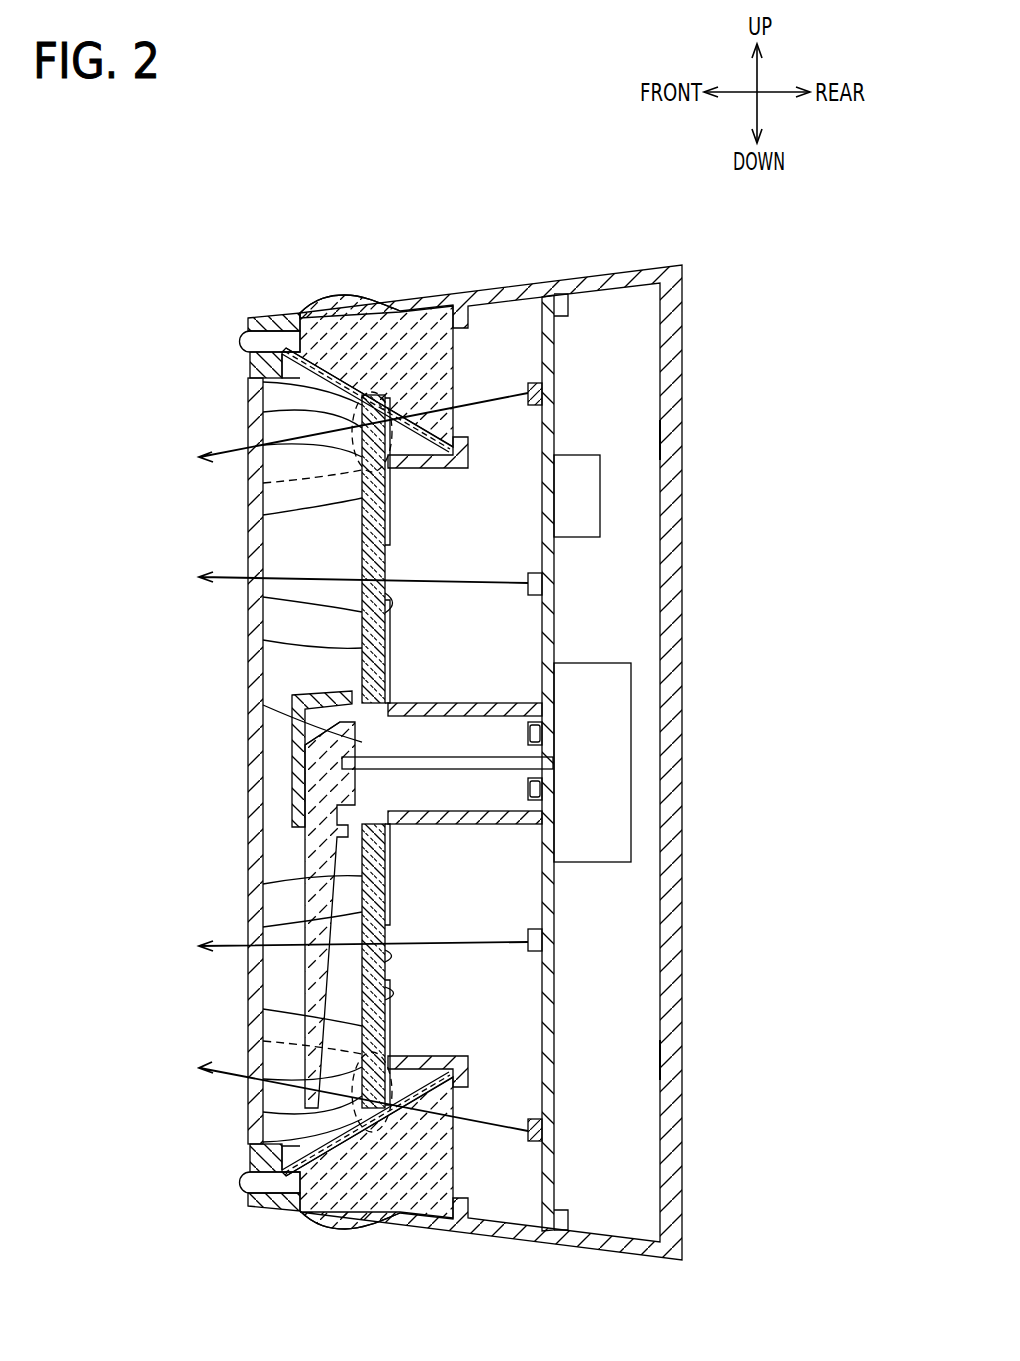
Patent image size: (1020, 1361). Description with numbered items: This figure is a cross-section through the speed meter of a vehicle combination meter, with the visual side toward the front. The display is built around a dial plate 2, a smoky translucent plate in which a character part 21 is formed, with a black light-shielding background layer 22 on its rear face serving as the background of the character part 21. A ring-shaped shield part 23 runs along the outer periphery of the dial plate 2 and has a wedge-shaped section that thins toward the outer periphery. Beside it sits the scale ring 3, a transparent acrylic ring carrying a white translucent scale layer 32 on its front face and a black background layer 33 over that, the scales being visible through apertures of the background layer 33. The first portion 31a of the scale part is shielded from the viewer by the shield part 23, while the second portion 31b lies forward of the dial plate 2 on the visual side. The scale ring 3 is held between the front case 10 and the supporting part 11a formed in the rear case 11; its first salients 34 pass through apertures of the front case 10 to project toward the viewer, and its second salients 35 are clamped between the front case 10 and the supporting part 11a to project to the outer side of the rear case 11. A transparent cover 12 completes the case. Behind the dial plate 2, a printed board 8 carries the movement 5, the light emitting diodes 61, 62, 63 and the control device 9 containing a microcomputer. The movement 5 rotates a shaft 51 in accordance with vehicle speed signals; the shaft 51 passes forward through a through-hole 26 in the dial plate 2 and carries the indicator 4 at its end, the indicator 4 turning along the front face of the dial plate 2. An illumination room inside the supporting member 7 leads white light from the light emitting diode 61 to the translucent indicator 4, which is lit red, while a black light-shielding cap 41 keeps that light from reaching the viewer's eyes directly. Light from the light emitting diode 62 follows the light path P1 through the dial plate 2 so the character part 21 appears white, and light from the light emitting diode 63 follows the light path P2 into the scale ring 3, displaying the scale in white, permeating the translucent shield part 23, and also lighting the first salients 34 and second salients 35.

The dial plate 2 is at (365, 635).
The scale ring 3 is at (375, 345).
The indicator 4 is at (318, 905).
The movement 5 is at (615, 780).
The supporting member 7 is at (480, 826).
The printed board 8 is at (540, 335).
The control device 9 is at (585, 497).
The front case 10 is at (285, 325).
The rear case 11 is at (625, 285).
The supporting part 11a is at (662, 440).
The transparent cover 12 is at (256, 835).
The character part 21 is at (385, 604).
The background layer 22 is at (392, 1000).
The shield part 23 is at (283, 475).
The through-hole 26 is at (322, 738).
The first portion of the scale part 31a is at (366, 460).
The second portion of the scale part 31b is at (335, 392).
The scale layer 32 is at (283, 380).
The background layer 33 is at (272, 362).
The first salients 34 is at (246, 342).
The second salients 35 is at (330, 300).
The light-shielding cap 41 is at (298, 788).
The shaft 51 is at (520, 762).
The light emitting diode 61 is at (540, 734).
The light emitting diode 62 is at (545, 583).
The light emitting diode 63 is at (545, 392).
The light path P1 is at (200, 575).
The light path P2 is at (213, 462).